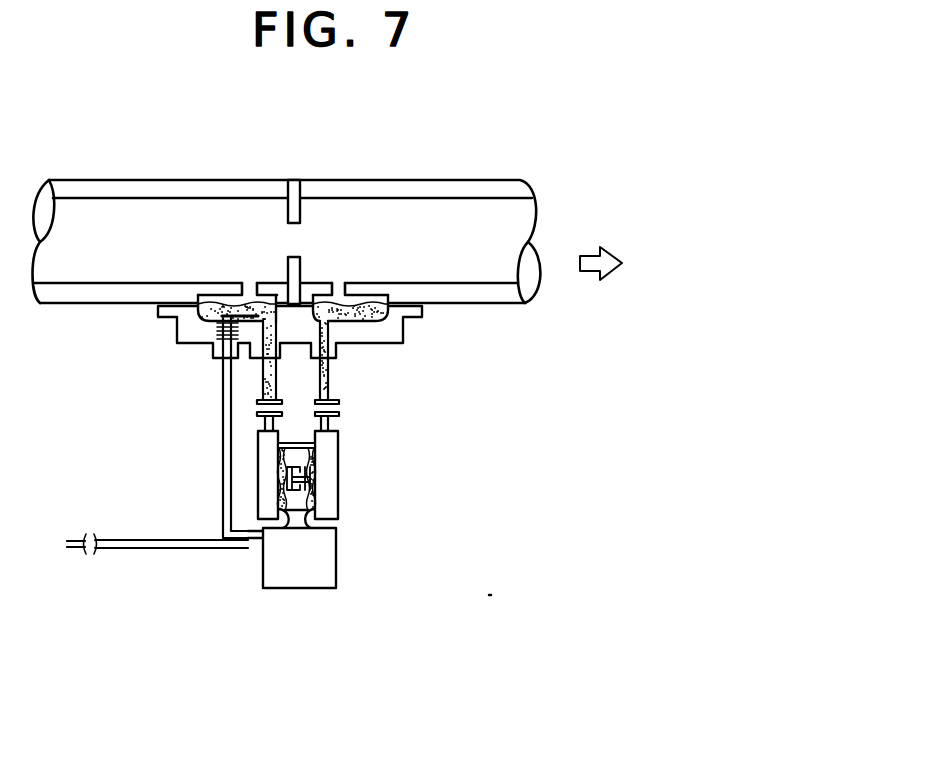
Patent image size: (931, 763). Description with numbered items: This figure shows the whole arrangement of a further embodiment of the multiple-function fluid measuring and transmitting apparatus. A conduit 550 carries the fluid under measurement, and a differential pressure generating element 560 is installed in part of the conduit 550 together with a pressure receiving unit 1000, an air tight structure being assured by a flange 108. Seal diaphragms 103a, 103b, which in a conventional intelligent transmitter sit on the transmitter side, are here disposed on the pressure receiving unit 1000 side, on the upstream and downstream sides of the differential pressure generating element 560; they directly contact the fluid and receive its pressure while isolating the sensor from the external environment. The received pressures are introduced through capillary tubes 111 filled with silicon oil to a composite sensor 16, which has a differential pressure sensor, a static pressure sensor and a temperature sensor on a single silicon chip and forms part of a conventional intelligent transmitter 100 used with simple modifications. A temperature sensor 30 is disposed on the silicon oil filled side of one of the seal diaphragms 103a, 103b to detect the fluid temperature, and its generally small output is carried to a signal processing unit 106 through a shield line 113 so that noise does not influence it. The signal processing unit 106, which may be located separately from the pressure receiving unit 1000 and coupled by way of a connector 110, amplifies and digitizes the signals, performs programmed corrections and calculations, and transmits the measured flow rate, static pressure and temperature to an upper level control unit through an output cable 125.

The conduit 550 is at (97, 184).
The differential pressure generating element 560 is at (301, 211).
The seal diaphragm 103b is at (215, 300).
The seal diaphragm 103a is at (378, 302).
The temperature sensor 30 is at (251, 302).
The flange 108 is at (170, 319).
The pressure receiving unit 1000 is at (393, 332).
The connector 110 is at (213, 354).
The capillary tubes 111 is at (330, 382).
The shield line 113 is at (222, 465).
The composite sensor 16 is at (338, 459).
The intelligent transmitter 100 is at (338, 506).
The signal processing unit 106 is at (295, 590).
The output cable 125 is at (164, 550).